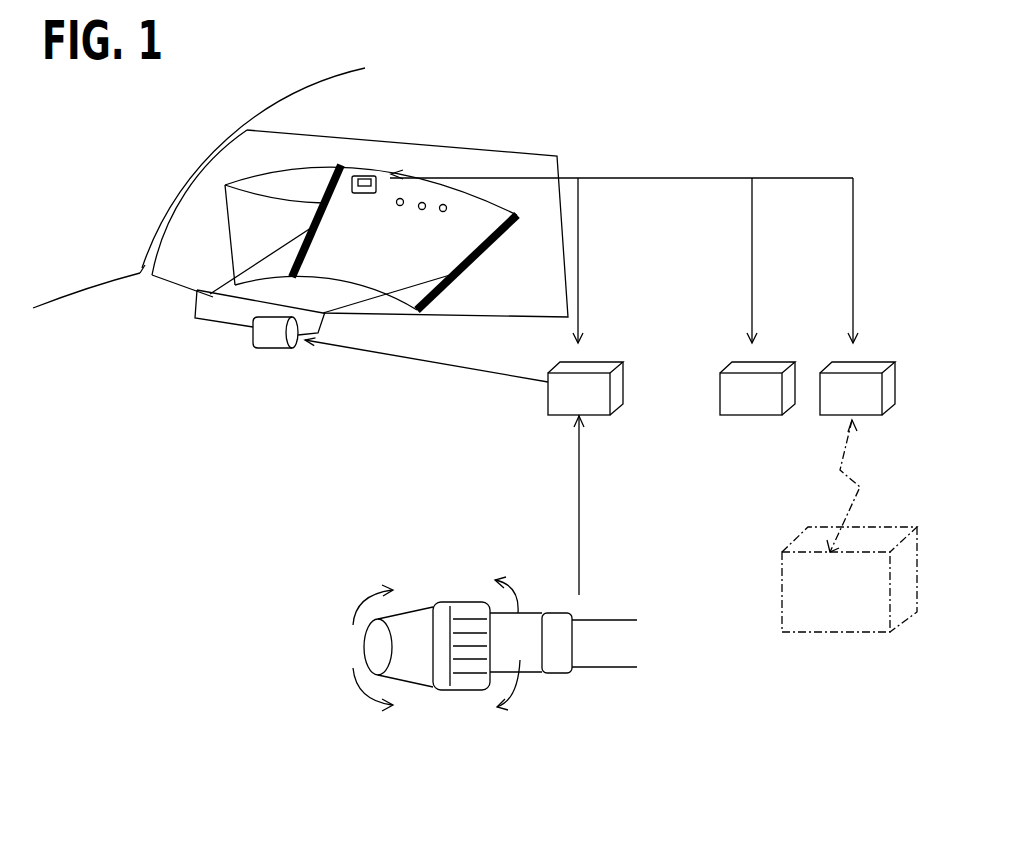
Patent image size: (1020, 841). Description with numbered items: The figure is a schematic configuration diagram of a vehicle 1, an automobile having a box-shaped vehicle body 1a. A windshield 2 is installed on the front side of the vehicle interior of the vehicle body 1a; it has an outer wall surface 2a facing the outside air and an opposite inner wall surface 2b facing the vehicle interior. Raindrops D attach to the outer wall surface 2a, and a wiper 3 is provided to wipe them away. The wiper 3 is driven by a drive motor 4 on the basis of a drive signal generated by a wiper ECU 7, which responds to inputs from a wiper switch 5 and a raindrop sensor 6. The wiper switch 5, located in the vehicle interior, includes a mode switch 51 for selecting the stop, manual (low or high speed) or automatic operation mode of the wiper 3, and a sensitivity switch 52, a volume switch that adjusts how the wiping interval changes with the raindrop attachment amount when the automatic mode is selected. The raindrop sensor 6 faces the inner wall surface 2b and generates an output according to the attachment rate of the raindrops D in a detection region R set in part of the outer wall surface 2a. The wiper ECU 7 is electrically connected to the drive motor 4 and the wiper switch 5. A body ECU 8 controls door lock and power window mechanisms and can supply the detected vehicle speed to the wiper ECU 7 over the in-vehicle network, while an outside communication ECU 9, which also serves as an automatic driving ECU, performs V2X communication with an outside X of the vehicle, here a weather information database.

The vehicle 1 is at (571, 89).
The vehicle body 1a is at (320, 107).
The windshield 2 is at (243, 128).
The outer wall surface 2a is at (197, 248).
The inner wall surface 2b is at (543, 155).
The wiper 3 is at (233, 182).
The drive motor 4 is at (270, 332).
The wiper switch 5 is at (452, 647).
The mode switch 51 is at (413, 680).
The sensitivity switch 52 is at (463, 688).
The raindrop sensor 6 is at (391, 142).
The detection region R is at (357, 173).
The raindrops D is at (443, 200).
The wiper ECU 7 is at (555, 388).
The body ECU 8 is at (737, 405).
The outside communication ECU 9 is at (830, 400).
The outside X is at (815, 618).